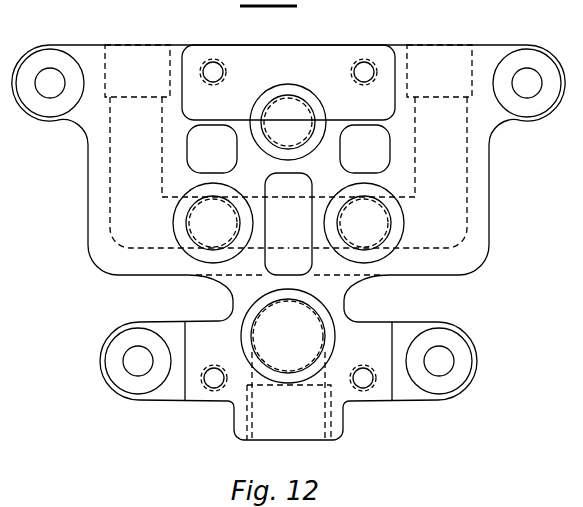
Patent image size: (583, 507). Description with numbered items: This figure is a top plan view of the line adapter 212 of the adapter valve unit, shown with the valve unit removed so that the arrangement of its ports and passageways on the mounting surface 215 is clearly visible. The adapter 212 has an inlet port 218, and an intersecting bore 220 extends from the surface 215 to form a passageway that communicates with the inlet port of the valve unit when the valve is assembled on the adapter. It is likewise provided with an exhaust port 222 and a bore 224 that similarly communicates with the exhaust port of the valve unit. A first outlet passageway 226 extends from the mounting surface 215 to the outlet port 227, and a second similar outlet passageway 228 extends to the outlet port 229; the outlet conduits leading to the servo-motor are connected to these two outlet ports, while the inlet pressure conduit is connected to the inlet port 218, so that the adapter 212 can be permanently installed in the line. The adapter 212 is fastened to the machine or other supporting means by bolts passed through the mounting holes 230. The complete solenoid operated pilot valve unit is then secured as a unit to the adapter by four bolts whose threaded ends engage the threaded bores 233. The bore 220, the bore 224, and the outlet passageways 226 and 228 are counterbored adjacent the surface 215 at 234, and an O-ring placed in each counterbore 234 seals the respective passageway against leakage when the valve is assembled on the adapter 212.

The line adapter 212 is at (492, 245).
The mounting surface 215 is at (341, 105).
The inlet port 218 is at (293, 60).
The intersecting bore 220 is at (314, 118).
The exhaust port 222 is at (292, 430).
The bore 224 is at (320, 343).
The first outlet passageway 226 is at (120, 168).
The outlet port 227 is at (132, 60).
The second outlet passageway 228 is at (352, 229).
The outlet port 229 is at (448, 60).
The mounting holes 230 is at (50, 80).
The threaded bores 233 is at (212, 64).
The counterbore 234 is at (263, 118).